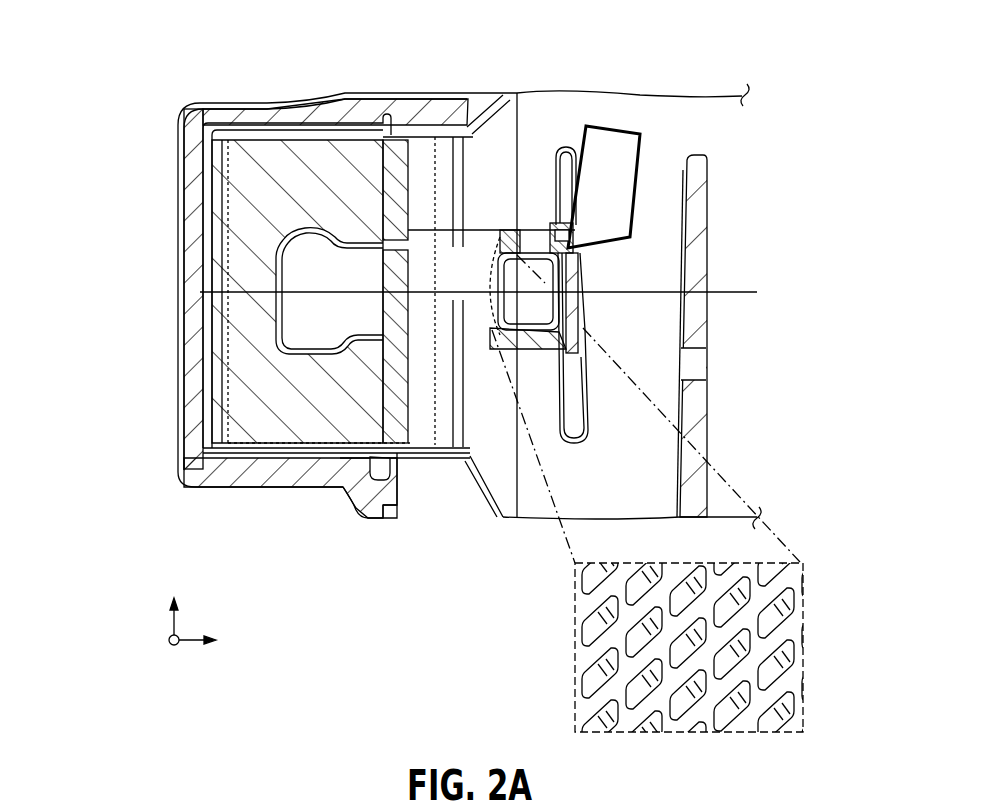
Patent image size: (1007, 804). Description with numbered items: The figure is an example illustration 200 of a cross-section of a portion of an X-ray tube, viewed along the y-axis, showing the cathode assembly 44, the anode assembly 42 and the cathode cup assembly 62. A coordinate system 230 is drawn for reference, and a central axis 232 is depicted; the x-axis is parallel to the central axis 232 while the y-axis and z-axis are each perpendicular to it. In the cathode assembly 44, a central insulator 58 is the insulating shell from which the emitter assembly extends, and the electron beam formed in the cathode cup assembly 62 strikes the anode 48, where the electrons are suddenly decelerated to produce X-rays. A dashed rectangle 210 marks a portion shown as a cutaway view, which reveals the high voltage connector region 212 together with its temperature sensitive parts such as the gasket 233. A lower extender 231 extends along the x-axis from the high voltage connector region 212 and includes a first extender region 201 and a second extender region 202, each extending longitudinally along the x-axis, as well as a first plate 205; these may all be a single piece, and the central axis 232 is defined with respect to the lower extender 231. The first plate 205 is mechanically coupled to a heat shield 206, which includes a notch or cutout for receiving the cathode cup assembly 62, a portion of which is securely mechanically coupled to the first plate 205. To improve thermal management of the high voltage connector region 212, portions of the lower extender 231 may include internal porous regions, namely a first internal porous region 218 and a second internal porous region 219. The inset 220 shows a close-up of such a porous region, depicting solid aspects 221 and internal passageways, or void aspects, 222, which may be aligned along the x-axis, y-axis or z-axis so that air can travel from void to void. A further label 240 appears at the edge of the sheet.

The cathode assembly 44 is at (327, 160).
The example illustration 200 is at (775, 86).
The cathode cup assembly 62 is at (632, 143).
The anode 48 is at (693, 207).
The anode assembly 42 is at (726, 266).
The dashed rectangle 210 is at (230, 199).
The high voltage connector region 212 is at (303, 248).
The insulator 58 is at (197, 332).
The first internal porous region 218 is at (481, 237).
The first extender region 201 is at (521, 232).
The lower extender 231 is at (487, 284).
The first plate 205 is at (578, 308).
The second internal porous region 219 is at (586, 333).
The central axis 232 is at (757, 293).
The heat shield 206 is at (578, 411).
The second extender region 202 is at (517, 344).
The gasket 233 is at (392, 406).
The coordinate system 230 is at (130, 538).
The inset 220 is at (812, 604).
The solid aspects 221 is at (587, 654).
The internal passageways 222 is at (638, 684).
The reference 240 is at (830, 795).